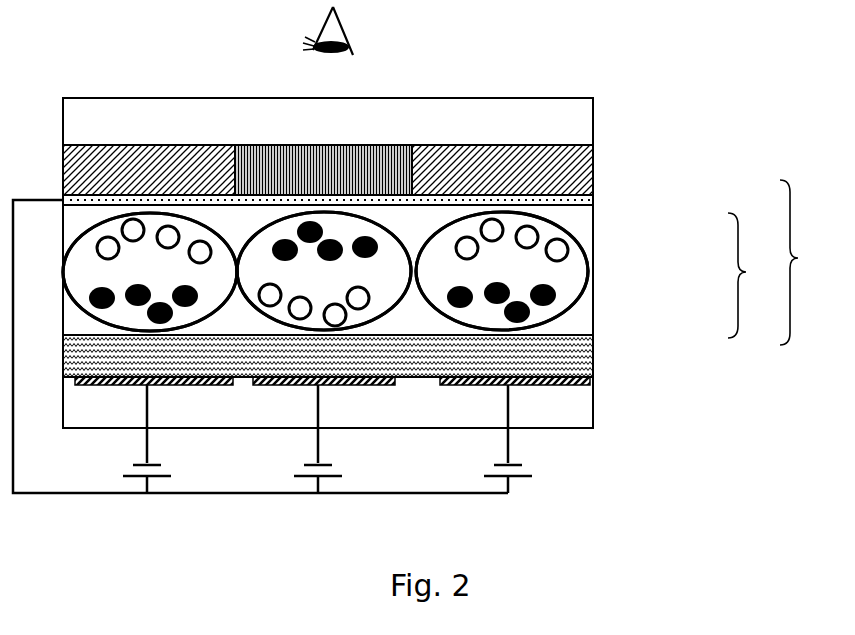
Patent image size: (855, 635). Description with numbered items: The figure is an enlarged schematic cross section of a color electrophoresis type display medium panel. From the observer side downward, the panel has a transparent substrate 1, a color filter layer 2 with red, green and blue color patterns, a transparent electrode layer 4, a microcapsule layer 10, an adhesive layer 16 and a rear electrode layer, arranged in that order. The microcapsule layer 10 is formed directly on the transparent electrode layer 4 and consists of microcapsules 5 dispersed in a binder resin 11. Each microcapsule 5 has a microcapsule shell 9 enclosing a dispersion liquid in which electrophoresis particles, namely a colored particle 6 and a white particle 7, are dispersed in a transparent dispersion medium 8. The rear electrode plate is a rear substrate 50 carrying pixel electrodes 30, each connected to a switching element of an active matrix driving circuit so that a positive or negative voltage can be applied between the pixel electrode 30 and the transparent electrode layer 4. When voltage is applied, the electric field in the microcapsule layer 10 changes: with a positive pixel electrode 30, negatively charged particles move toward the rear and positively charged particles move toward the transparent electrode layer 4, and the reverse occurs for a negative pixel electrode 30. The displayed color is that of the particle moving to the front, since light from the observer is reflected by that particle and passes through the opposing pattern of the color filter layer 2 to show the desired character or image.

The transparent substrate 1 is at (535, 120).
The color filter layer 2 is at (200, 161).
The transparent electrode layer 4 is at (537, 200).
The binder resin 11 is at (580, 222).
The white particle 7 is at (560, 247).
The transparent dispersion medium 8 is at (386, 270).
The microcapsule shell 9 is at (527, 310).
The colored particle 6 is at (575, 309).
The microcapsule 5 is at (745, 275).
The microcapsule layer 10 is at (805, 262).
The adhesive layer 16 is at (593, 360).
The pixel electrode 30 is at (233, 383).
The rear substrate 50 is at (467, 415).